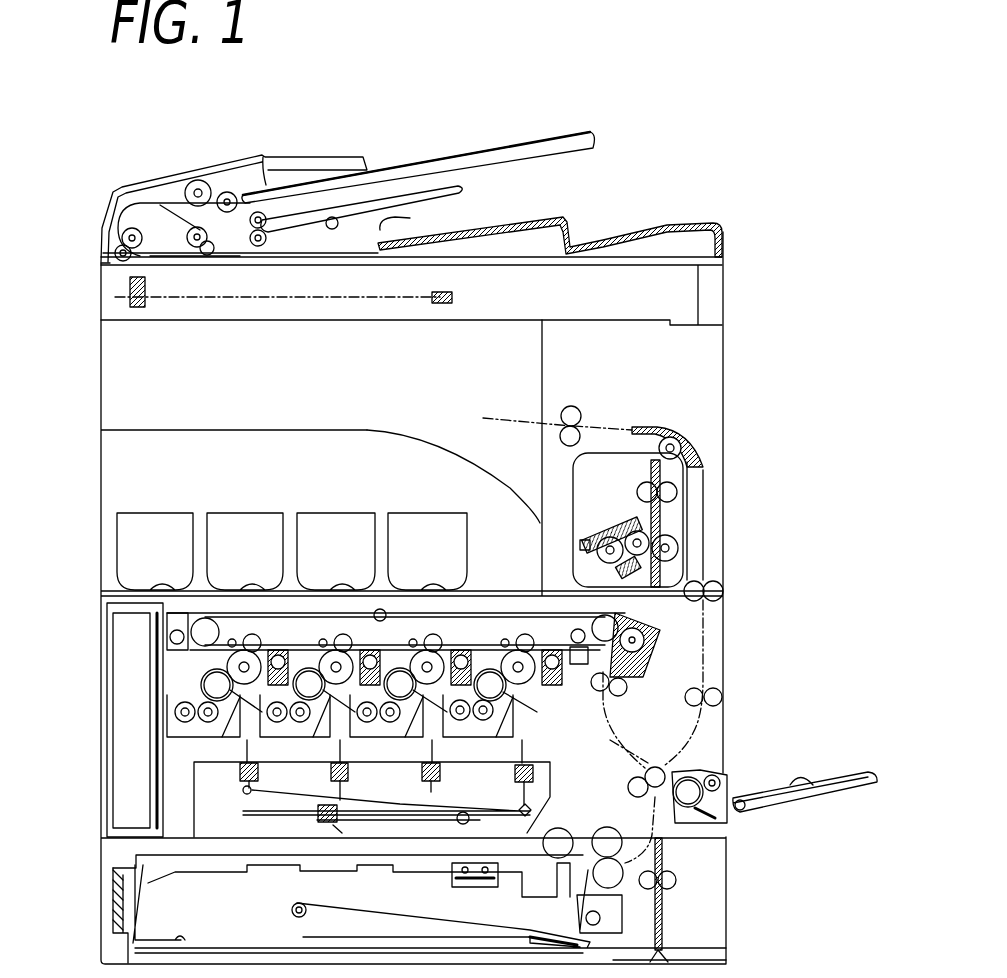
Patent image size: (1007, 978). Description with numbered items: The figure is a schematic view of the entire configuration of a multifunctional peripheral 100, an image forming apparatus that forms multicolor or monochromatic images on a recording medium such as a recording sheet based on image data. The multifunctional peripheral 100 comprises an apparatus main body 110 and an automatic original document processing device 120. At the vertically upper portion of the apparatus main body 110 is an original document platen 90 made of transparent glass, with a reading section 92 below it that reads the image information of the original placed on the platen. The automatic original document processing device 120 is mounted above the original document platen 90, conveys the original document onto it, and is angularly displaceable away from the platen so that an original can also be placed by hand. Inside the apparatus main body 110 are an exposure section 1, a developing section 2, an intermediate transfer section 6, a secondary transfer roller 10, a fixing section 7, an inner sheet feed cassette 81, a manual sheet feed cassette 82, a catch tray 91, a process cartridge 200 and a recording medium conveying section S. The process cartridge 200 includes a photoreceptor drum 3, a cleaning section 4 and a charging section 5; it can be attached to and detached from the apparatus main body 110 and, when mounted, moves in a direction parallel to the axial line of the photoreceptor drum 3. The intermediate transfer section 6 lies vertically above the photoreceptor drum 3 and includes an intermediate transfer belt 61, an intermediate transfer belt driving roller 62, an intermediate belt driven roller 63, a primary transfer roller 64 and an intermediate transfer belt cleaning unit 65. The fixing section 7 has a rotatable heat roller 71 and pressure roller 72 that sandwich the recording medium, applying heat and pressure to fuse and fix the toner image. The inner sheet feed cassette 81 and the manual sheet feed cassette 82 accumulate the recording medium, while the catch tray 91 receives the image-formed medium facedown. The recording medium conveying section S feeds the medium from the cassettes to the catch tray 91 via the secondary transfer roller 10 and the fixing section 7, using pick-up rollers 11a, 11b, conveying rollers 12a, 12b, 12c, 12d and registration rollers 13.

The multifunctional peripheral 100 is at (718, 190).
The apparatus main body 110 is at (91, 458).
The automatic original document processing device 120 is at (218, 138).
The original document platen 90 is at (497, 243).
The catch tray 91 is at (318, 430).
The reading section 92 is at (722, 294).
The exposure section 1 is at (550, 770).
The developing section 2 is at (203, 682).
The photoreceptor drum 3 is at (222, 666).
The cleaning section 4 is at (293, 650).
The charging section 5 is at (247, 739).
The intermediate transfer section 6 is at (483, 593).
The intermediate transfer belt 61 is at (507, 590).
The intermediate transfer belt driving roller 62 is at (632, 613).
The intermediate belt driven roller 63 is at (220, 592).
The primary transfer roller 64 is at (340, 632).
The intermediate transfer belt cleaning unit 65 is at (180, 595).
The fixing section 7 is at (687, 537).
The heat roller 71 is at (662, 532).
The pressure roller 72 is at (685, 560).
The secondary transfer roller 10 is at (650, 645).
The pick-up roller 11a is at (565, 833).
The pick-up roller 11b is at (730, 777).
The conveying roller 12a is at (663, 768).
The conveying roller 12b is at (573, 410).
The conveying roller 12c is at (723, 594).
The conveying roller 12d is at (723, 698).
The registration rollers 13 is at (628, 688).
The inner sheet feed cassette 81 is at (368, 910).
The manual sheet feed cassette 82 is at (818, 773).
The process cartridge 200 is at (277, 626).
The recording medium conveying section S is at (780, 650).